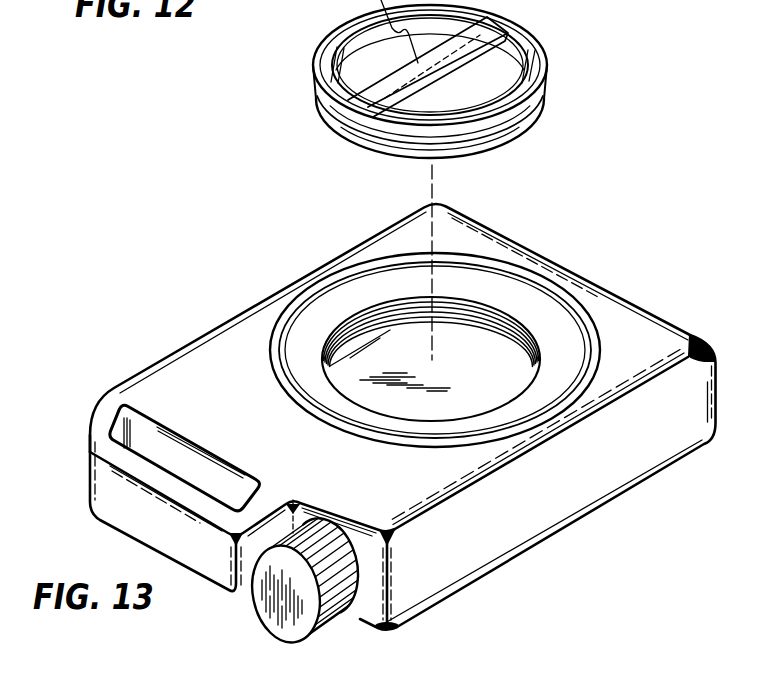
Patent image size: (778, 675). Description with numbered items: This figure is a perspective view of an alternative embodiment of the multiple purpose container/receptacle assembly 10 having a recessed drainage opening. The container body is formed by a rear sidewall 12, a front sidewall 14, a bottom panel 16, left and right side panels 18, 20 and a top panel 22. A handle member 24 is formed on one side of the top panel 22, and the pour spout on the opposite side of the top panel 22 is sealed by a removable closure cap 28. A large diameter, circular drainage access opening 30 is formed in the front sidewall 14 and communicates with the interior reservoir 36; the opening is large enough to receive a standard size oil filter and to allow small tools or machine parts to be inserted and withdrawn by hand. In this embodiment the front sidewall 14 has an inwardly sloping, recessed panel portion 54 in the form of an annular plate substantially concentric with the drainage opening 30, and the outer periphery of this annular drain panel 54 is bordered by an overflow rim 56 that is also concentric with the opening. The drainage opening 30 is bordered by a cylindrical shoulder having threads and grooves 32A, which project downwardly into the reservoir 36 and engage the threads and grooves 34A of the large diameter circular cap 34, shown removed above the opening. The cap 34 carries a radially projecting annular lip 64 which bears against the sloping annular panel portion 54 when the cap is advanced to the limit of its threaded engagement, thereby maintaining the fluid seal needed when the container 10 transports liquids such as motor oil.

The container/receptacle assembly 10 is at (158, 304).
The rear sidewall 12 is at (525, 541).
The front sidewall 14 is at (630, 331).
The bottom panel 16 is at (509, 236).
The left side panel 18 is at (617, 463).
The right side panel 20 is at (273, 301).
The top panel 22 is at (178, 450).
The handle member 24 is at (120, 501).
The removable closure cap 28 is at (345, 619).
The drainage access opening 30 is at (348, 394).
The threads and grooves 32A is at (490, 309).
The circular cap 34 is at (560, 60).
The threads and grooves 34A is at (371, 139).
The reservoir 36 is at (498, 381).
The recessed panel portion 54 is at (298, 348).
The overflow rim 56 is at (395, 439).
The annular lip 64 is at (328, 80).